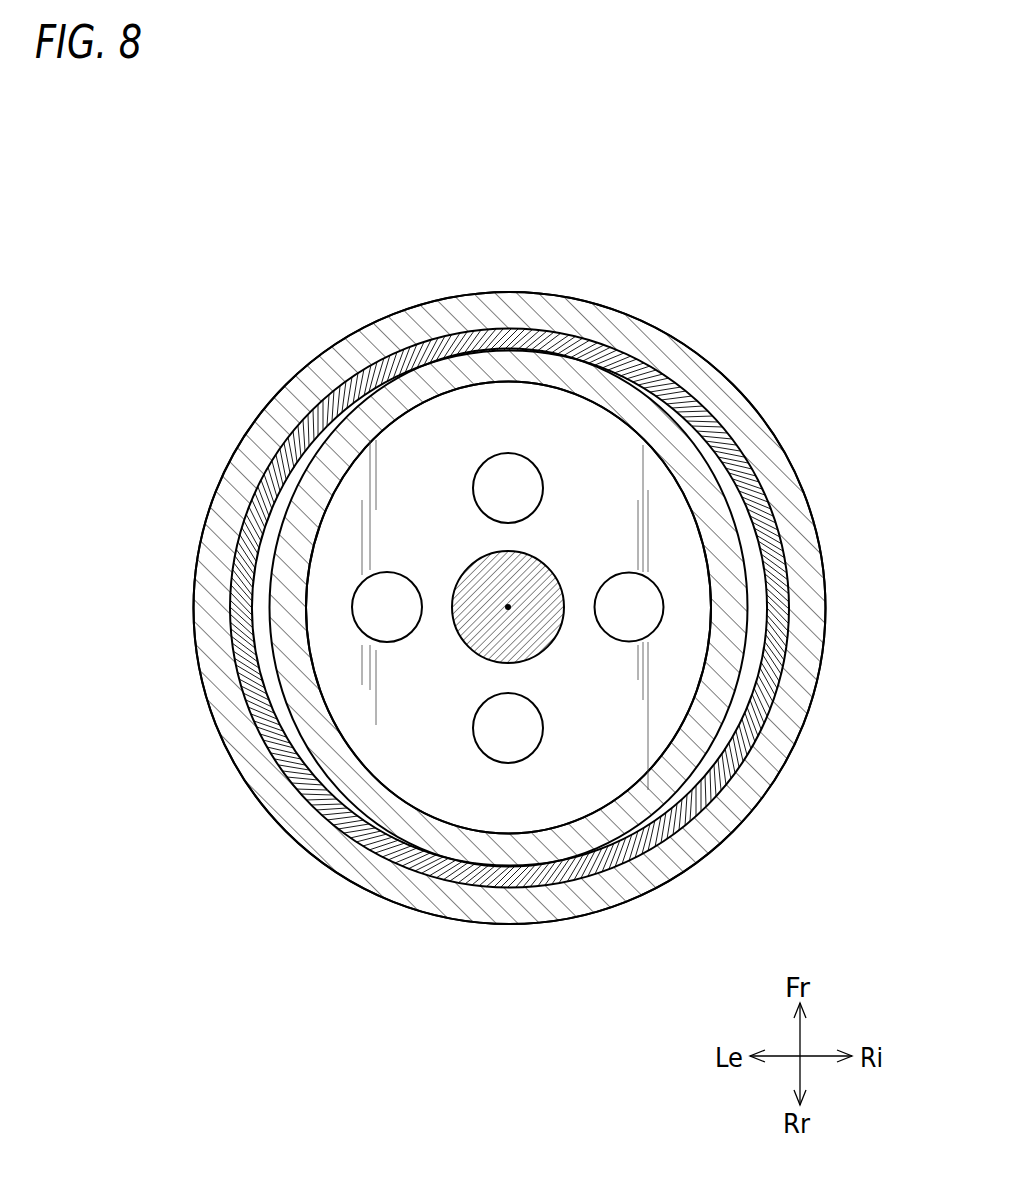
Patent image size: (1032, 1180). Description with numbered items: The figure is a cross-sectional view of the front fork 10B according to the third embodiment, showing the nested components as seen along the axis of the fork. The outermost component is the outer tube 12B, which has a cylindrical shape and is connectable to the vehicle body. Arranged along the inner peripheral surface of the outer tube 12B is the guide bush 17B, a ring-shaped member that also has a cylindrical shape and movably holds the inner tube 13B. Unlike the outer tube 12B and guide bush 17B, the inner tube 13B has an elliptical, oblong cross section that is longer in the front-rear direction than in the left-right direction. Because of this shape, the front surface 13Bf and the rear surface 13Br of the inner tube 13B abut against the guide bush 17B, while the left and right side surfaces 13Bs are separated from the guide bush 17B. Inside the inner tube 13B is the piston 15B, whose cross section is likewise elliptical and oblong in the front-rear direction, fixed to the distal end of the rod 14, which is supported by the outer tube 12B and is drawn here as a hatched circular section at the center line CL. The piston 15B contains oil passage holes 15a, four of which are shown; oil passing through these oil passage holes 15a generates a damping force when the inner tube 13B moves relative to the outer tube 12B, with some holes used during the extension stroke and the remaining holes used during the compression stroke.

The front fork 10B is at (250, 190).
The outer tube 12B is at (540, 307).
The inner tube 13B is at (693, 477).
The front surface 13Bf is at (498, 347).
The rear surface 13Br is at (502, 880).
The side surfaces 13Bs is at (265, 604).
The rod 14 is at (540, 563).
The oil passage holes 15a is at (502, 450).
The piston 15B is at (438, 787).
The guide bush 17B is at (680, 370).
The center line CL is at (507, 606).